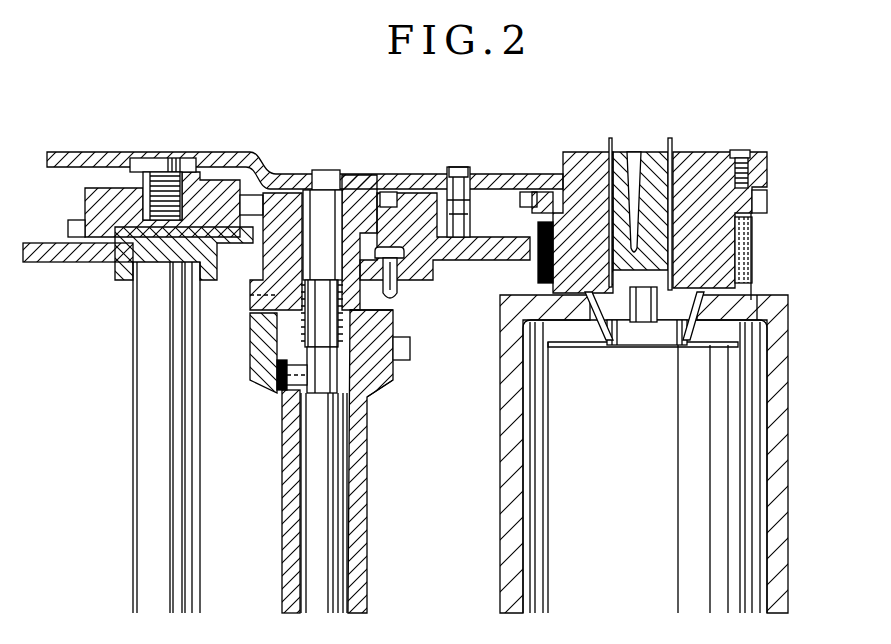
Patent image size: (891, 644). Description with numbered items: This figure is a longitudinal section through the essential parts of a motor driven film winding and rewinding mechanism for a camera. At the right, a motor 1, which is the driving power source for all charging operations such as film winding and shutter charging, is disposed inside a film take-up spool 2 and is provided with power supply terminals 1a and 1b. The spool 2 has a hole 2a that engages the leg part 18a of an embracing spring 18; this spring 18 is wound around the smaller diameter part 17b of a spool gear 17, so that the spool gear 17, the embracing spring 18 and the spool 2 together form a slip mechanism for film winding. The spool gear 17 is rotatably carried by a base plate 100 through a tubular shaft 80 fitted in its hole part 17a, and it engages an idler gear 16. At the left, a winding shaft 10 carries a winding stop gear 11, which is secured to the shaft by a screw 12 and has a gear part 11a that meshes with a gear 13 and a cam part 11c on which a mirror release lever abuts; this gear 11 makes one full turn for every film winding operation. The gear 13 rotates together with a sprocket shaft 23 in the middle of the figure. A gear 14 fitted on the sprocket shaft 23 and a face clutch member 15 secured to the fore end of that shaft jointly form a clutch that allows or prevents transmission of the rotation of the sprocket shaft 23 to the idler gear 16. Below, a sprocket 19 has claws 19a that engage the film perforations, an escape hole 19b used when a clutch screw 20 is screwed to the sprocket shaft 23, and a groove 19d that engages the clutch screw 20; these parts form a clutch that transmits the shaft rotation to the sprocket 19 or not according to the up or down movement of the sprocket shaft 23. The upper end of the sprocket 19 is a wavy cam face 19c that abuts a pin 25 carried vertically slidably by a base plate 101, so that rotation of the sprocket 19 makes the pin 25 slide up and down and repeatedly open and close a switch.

The motor 1 is at (747, 431).
The power supply terminal 1a is at (611, 140).
The power supply terminal 1b is at (673, 140).
The film take-up spool 2 is at (790, 490).
The hole 2a is at (753, 297).
The winding shaft 10 is at (143, 445).
The winding stop gear 11 is at (228, 183).
The gear part 11a is at (243, 192).
The cam part 11c is at (118, 180).
The screw 12 is at (147, 158).
The gear 13 is at (268, 235).
The gear 14 is at (368, 177).
The member 15 is at (294, 193).
The idler gear 16 is at (412, 193).
The spool gear 17 is at (548, 200).
The hole part 17a is at (752, 203).
The smaller diameter part 17b is at (730, 243).
The embracing spring 18 is at (538, 270).
The leg part 18a is at (757, 312).
The sprocket 19 is at (368, 483).
The claws 19a is at (412, 350).
The escape hole 19b is at (262, 380).
The cam face 19c is at (392, 312).
The groove 19d is at (370, 397).
The clutch screw 20 is at (263, 390).
The sprocket shaft 23 is at (335, 532).
The pin 25 is at (392, 293).
The tubular shaft 80 is at (570, 152).
The base plate 100 is at (766, 177).
The base plate 101 is at (497, 180).